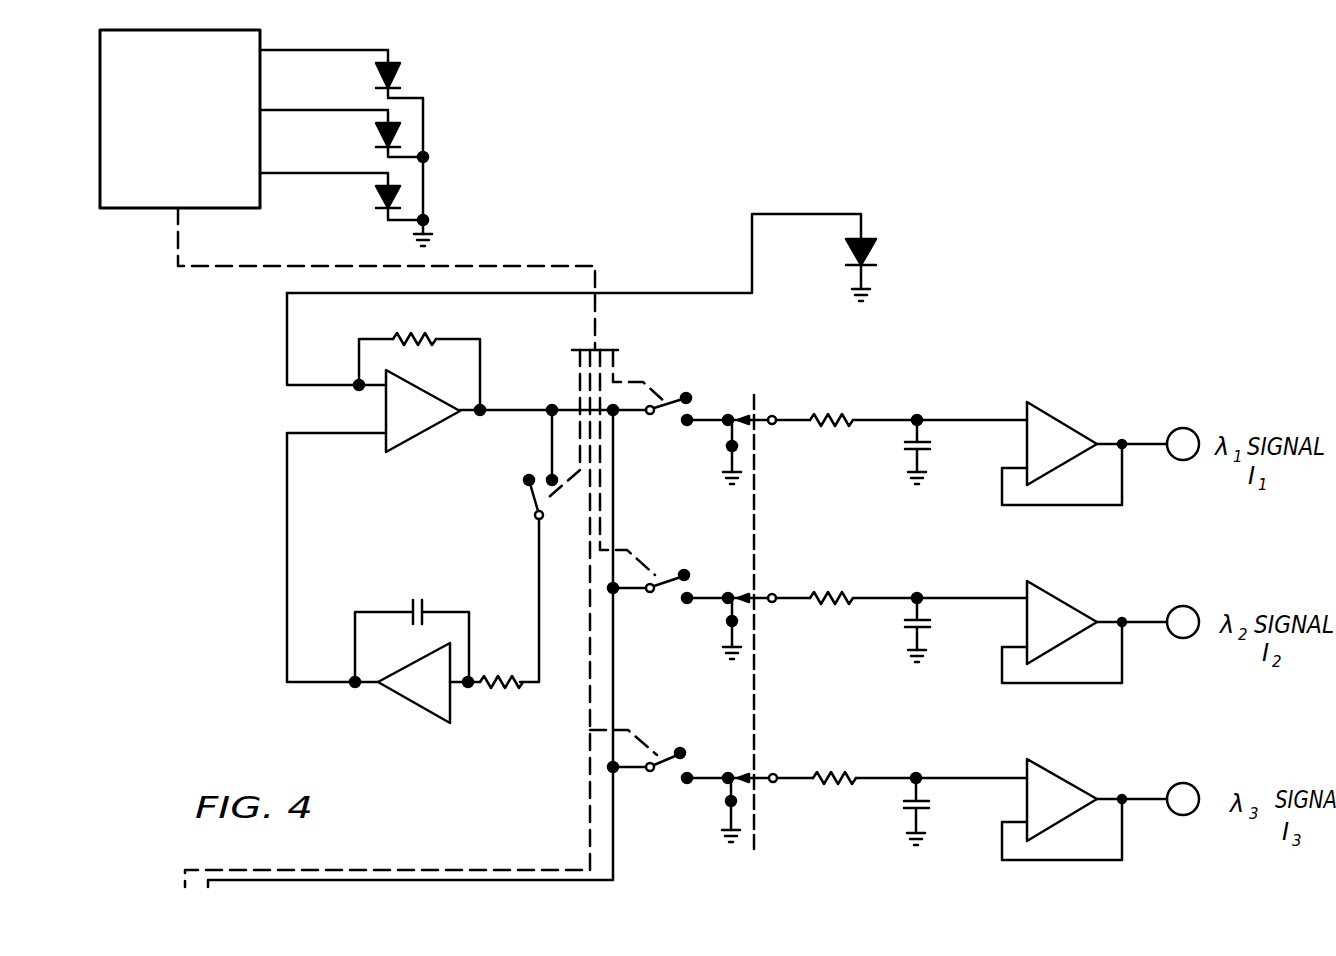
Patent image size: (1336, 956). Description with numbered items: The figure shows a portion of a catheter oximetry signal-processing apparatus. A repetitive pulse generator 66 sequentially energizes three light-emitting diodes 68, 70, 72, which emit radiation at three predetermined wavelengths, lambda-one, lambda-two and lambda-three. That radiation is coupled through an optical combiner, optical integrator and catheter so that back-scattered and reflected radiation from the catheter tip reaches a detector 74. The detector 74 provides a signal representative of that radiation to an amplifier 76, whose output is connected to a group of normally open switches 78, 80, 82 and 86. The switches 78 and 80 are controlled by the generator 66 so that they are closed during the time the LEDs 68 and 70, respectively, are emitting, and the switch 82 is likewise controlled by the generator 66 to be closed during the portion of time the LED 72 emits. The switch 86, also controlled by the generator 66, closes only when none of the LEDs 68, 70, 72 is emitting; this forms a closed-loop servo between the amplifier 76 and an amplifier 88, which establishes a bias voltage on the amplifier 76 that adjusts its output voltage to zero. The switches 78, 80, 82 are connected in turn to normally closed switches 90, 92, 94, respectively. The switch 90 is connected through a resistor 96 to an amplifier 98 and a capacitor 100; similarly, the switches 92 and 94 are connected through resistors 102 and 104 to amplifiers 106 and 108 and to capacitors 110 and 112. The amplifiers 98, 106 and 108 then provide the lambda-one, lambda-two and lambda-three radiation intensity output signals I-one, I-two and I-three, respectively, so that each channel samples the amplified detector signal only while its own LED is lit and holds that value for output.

The repetitive pulse generator 66 is at (124, 210).
The light-emitting diode 68 is at (400, 70).
The light-emitting diode 70 is at (400, 135).
The light-emitting diode 72 is at (400, 193).
The detector 74 is at (876, 250).
The amplifier 76 is at (427, 427).
The normally open switch 78 is at (681, 402).
The normally open switch 80 is at (673, 580).
The normally open switch 82 is at (664, 757).
The normally open switch 86 is at (535, 494).
The amplifier 88 is at (405, 692).
The normally closed switch 90 is at (772, 415).
The normally closed switch 92 is at (773, 593).
The normally closed switch 94 is at (774, 773).
The resistor 96 is at (830, 416).
The amplifier 98 is at (1060, 420).
The capacitor 100 is at (931, 447).
The resistor 102 is at (832, 594).
The resistor 104 is at (836, 774).
The amplifier 106 is at (1073, 602).
The amplifier 108 is at (1080, 778).
The capacitor 110 is at (931, 625).
The capacitor 112 is at (930, 807).